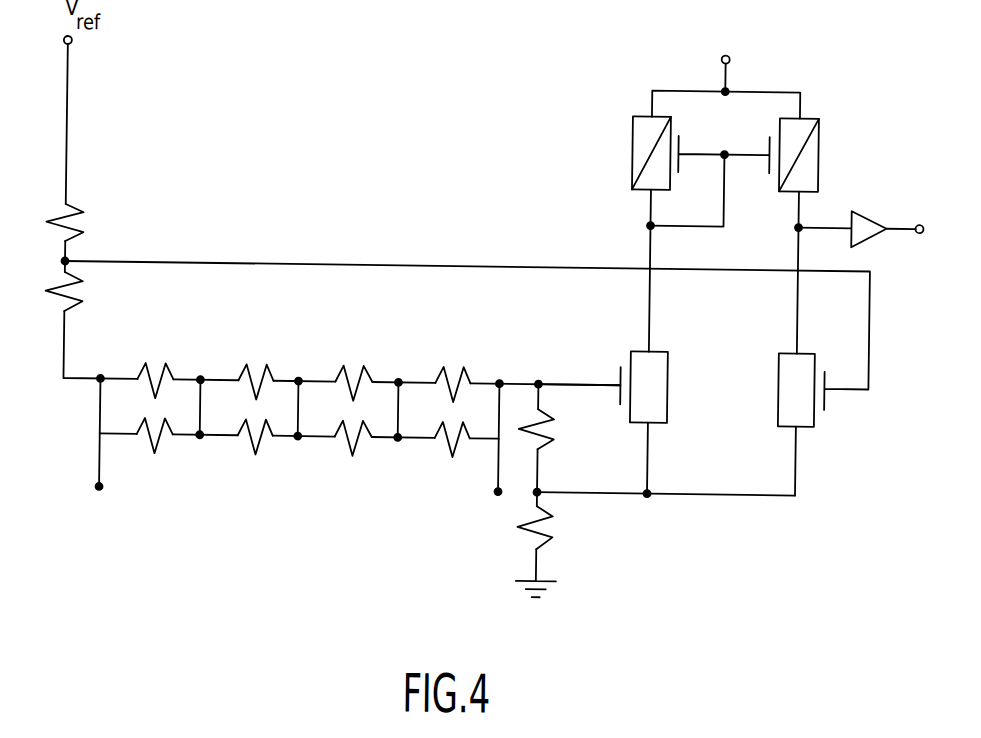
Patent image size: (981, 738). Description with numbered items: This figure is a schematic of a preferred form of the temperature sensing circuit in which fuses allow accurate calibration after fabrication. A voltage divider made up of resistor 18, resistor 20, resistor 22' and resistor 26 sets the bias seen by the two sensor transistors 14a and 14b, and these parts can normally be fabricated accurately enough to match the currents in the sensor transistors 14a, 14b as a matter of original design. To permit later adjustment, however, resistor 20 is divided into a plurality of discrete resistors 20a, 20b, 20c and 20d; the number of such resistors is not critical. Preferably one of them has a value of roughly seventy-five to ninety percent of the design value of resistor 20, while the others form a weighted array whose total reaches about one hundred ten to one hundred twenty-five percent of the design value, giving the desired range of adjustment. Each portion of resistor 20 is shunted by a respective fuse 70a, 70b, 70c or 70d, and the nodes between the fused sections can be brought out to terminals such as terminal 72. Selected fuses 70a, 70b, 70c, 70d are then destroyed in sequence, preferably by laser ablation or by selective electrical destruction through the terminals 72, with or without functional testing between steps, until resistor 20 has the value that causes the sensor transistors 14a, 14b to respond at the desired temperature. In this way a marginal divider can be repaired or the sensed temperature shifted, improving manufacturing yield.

The resistor 18 is at (75, 210).
The resistor 20 is at (541, 328).
The discrete resistor 20a is at (172, 369).
The discrete resistor 20b is at (273, 367).
The discrete resistor 20c is at (373, 366).
The discrete resistor 20d is at (473, 364).
The fuse 70a is at (158, 449).
The fuse 70b is at (258, 447).
The fuse 70c is at (356, 446).
The fuse 70d is at (457, 445).
The tap terminal 72 is at (102, 487).
The resistor 26 is at (557, 418).
The resistor 22' is at (566, 531).
The sensor transistor 14a is at (669, 357).
The sensor transistor 14b is at (780, 397).